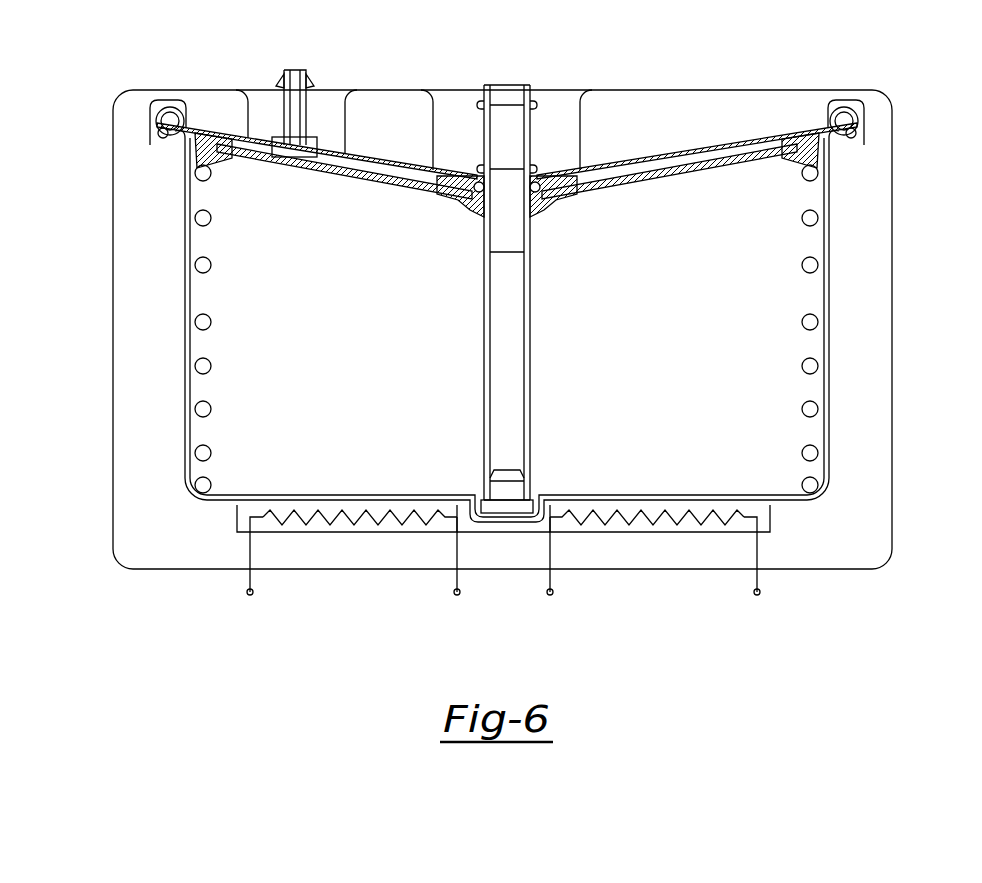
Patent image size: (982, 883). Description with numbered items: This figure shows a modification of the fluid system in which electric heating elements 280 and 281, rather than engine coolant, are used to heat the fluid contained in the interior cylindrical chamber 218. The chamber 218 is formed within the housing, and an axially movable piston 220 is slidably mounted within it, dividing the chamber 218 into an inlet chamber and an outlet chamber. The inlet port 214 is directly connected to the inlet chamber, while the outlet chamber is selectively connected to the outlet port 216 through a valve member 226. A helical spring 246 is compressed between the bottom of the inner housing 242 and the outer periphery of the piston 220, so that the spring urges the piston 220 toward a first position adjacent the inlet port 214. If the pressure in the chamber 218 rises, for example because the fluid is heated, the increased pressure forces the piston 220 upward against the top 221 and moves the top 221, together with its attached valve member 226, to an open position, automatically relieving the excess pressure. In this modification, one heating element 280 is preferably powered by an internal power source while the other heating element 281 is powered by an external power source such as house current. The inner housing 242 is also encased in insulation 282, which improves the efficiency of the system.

The inlet port 214 is at (297, 70).
The outlet port 216 is at (528, 100).
The interior cylindrical chamber 218 is at (430, 422).
The axially movable piston 220 is at (363, 182).
The top 221 is at (403, 158).
The valve member 226 is at (531, 316).
The inner housing 242 is at (208, 503).
The helical spring 246 is at (210, 361).
The electric heating element 280 is at (363, 520).
The electric heating element 281 is at (648, 520).
The insulation 282 is at (127, 433).